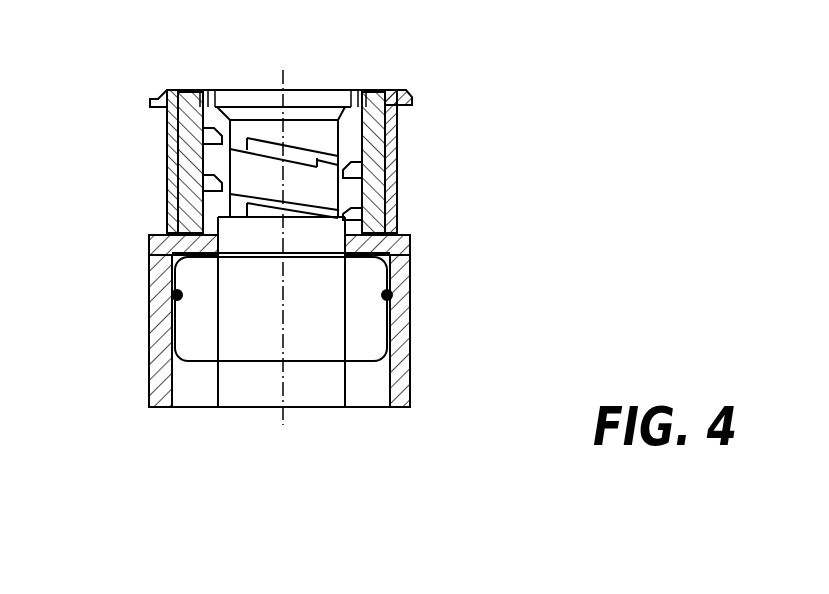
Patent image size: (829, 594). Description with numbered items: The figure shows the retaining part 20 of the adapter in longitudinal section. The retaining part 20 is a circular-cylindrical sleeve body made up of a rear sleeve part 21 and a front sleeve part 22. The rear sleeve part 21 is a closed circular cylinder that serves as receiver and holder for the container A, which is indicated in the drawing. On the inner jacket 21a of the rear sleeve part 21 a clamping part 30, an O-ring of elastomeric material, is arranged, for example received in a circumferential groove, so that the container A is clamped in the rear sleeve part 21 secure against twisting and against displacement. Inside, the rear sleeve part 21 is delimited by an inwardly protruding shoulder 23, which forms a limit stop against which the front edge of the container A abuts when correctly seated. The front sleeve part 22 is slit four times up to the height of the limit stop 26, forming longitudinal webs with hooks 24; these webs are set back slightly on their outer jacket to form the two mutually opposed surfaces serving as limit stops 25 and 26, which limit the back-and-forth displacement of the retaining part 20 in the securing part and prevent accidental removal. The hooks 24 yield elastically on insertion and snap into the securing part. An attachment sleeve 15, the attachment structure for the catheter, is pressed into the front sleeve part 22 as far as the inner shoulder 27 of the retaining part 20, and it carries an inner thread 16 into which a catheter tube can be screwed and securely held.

The attachment sleeve 15 is at (390, 125).
The inner thread 16 is at (215, 110).
The retaining part 20 is at (296, 254).
The rear sleeve part 21 is at (282, 359).
The inner jacket 21a is at (174, 377).
The front sleeve part 22 is at (152, 188).
The shoulder 23 is at (212, 278).
The hooks 24 is at (151, 103).
The limit stop 25 is at (136, 125).
The limit stop 26 is at (144, 220).
The inner shoulder 27 is at (382, 219).
The clamping part 30 is at (390, 296).
The container A is at (352, 362).